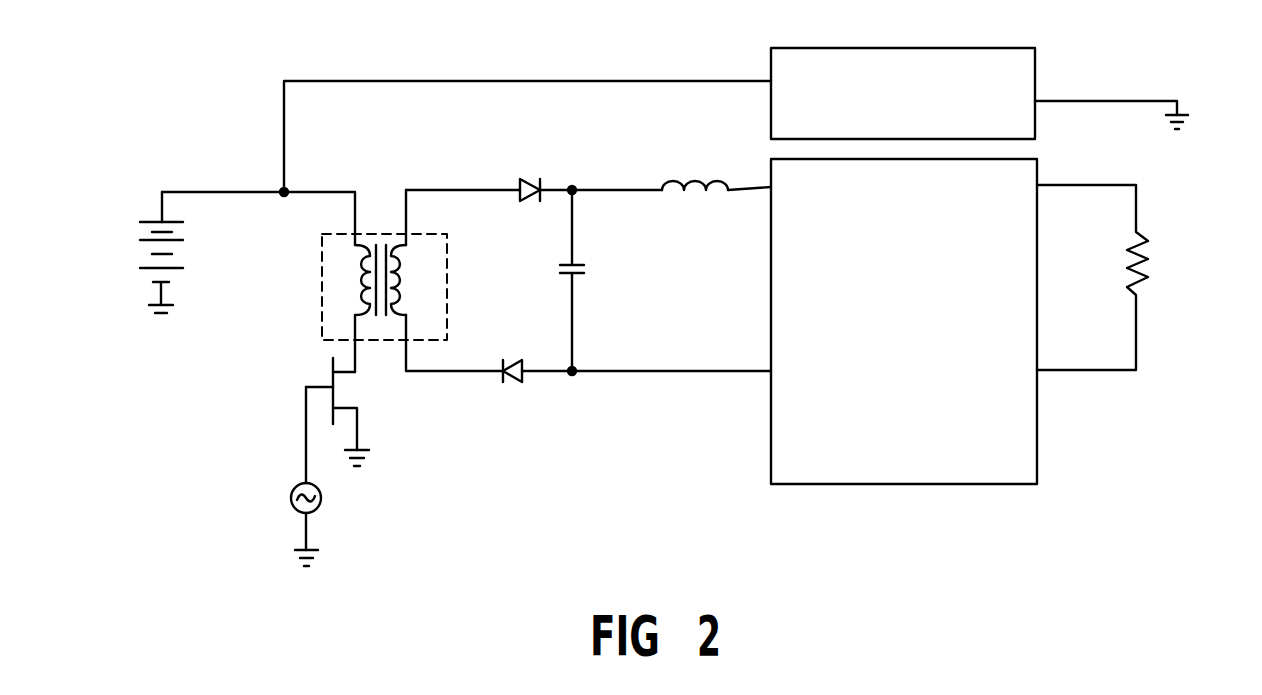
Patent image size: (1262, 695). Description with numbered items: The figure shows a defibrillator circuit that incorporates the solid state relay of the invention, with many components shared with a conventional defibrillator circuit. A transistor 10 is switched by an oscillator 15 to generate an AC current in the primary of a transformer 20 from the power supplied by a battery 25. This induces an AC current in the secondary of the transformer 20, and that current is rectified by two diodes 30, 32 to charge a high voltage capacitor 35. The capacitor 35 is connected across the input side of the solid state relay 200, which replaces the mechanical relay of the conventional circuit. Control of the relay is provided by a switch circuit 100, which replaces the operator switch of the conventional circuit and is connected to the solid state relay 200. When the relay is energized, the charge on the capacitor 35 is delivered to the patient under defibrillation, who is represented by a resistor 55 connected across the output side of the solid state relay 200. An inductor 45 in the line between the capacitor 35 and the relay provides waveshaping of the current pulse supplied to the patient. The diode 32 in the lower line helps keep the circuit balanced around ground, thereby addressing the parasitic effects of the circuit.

The transistor 10 is at (357, 385).
The oscillator 15 is at (290, 493).
The transformer 20 is at (322, 296).
The battery 25 is at (145, 217).
The diode 30 is at (520, 174).
The diode 32 is at (511, 384).
The high voltage capacitor 35 is at (560, 265).
The inductor 45 is at (667, 198).
The resistor 55 is at (1167, 270).
The switch circuit 100 is at (971, 47).
The solid state relay 200 is at (947, 378).